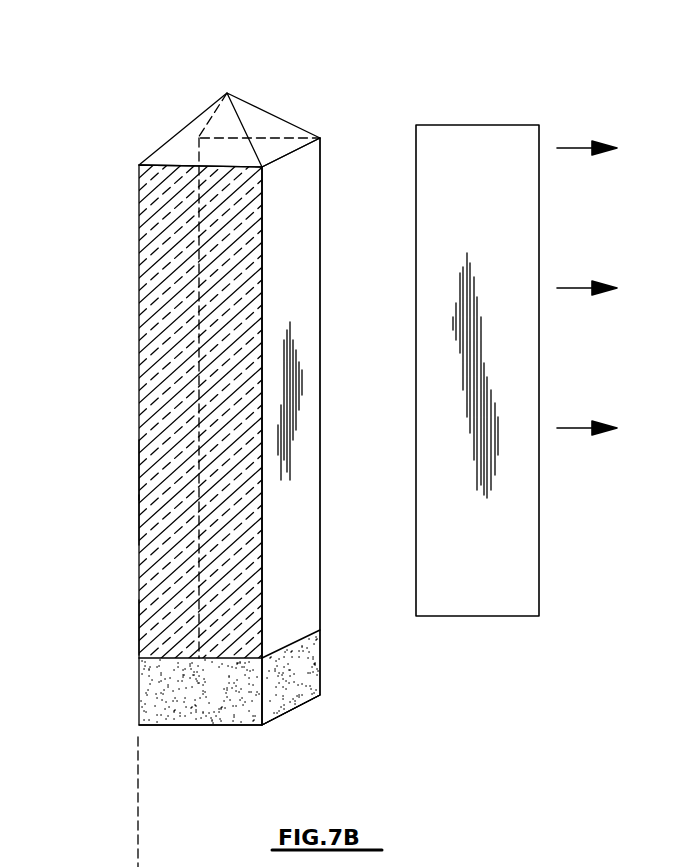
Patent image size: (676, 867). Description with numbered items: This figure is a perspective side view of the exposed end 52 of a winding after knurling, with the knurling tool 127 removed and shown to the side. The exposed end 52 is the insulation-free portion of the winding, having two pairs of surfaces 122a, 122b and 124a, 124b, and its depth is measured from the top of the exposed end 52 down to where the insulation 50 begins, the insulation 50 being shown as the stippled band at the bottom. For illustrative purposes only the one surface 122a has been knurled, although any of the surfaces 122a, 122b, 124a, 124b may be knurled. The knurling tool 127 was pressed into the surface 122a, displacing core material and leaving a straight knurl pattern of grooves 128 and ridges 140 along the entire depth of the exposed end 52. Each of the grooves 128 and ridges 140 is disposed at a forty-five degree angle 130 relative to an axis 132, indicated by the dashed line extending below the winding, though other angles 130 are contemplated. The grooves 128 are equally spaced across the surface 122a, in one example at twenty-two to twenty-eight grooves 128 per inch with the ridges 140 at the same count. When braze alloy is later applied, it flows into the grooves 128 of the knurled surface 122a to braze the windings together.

The exposed end 52 is at (98, 304).
The surface 122b is at (282, 130).
The surface 124b is at (145, 163).
The ridges 140 is at (177, 447).
The angle 130 is at (140, 488).
The grooves 128 is at (167, 518).
The surface 124a is at (273, 552).
The surface 122a is at (237, 617).
The insulation 50 is at (227, 707).
The axis 132 is at (137, 850).
The knurling tool 127 is at (458, 600).